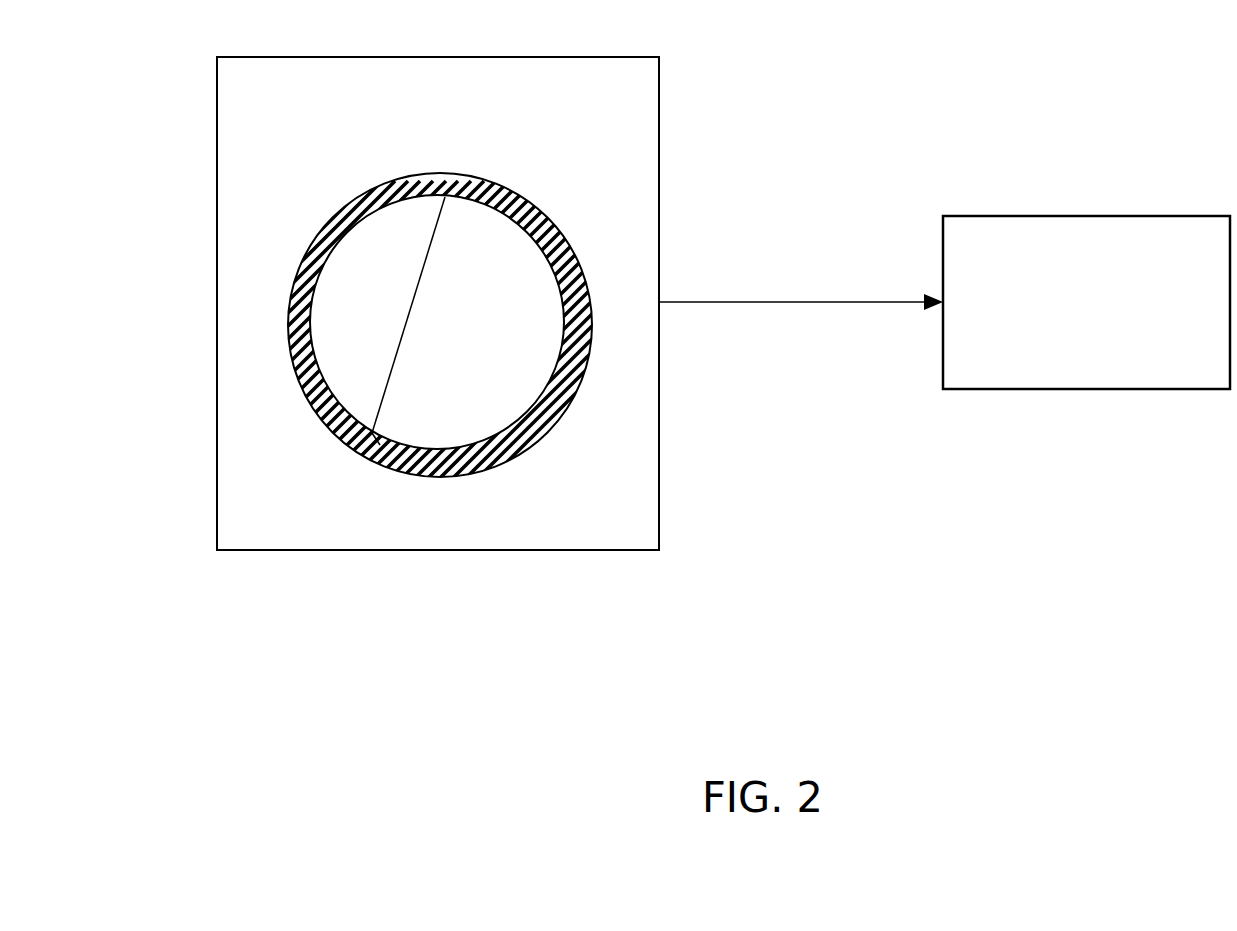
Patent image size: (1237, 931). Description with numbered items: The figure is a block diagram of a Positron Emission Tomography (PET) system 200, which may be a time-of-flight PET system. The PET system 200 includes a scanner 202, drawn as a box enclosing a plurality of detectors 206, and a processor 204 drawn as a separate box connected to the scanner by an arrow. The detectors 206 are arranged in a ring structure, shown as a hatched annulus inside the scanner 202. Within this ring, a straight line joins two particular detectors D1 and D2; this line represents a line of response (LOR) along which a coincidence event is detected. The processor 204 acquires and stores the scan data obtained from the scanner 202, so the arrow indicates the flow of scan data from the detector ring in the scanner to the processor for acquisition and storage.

The PET system 200 is at (375, 675).
The scanner 202 is at (438, 57).
The processor 204 is at (1087, 216).
The detectors 206 is at (545, 217).
The detector D1 is at (433, 175).
The detector D2 is at (403, 473).